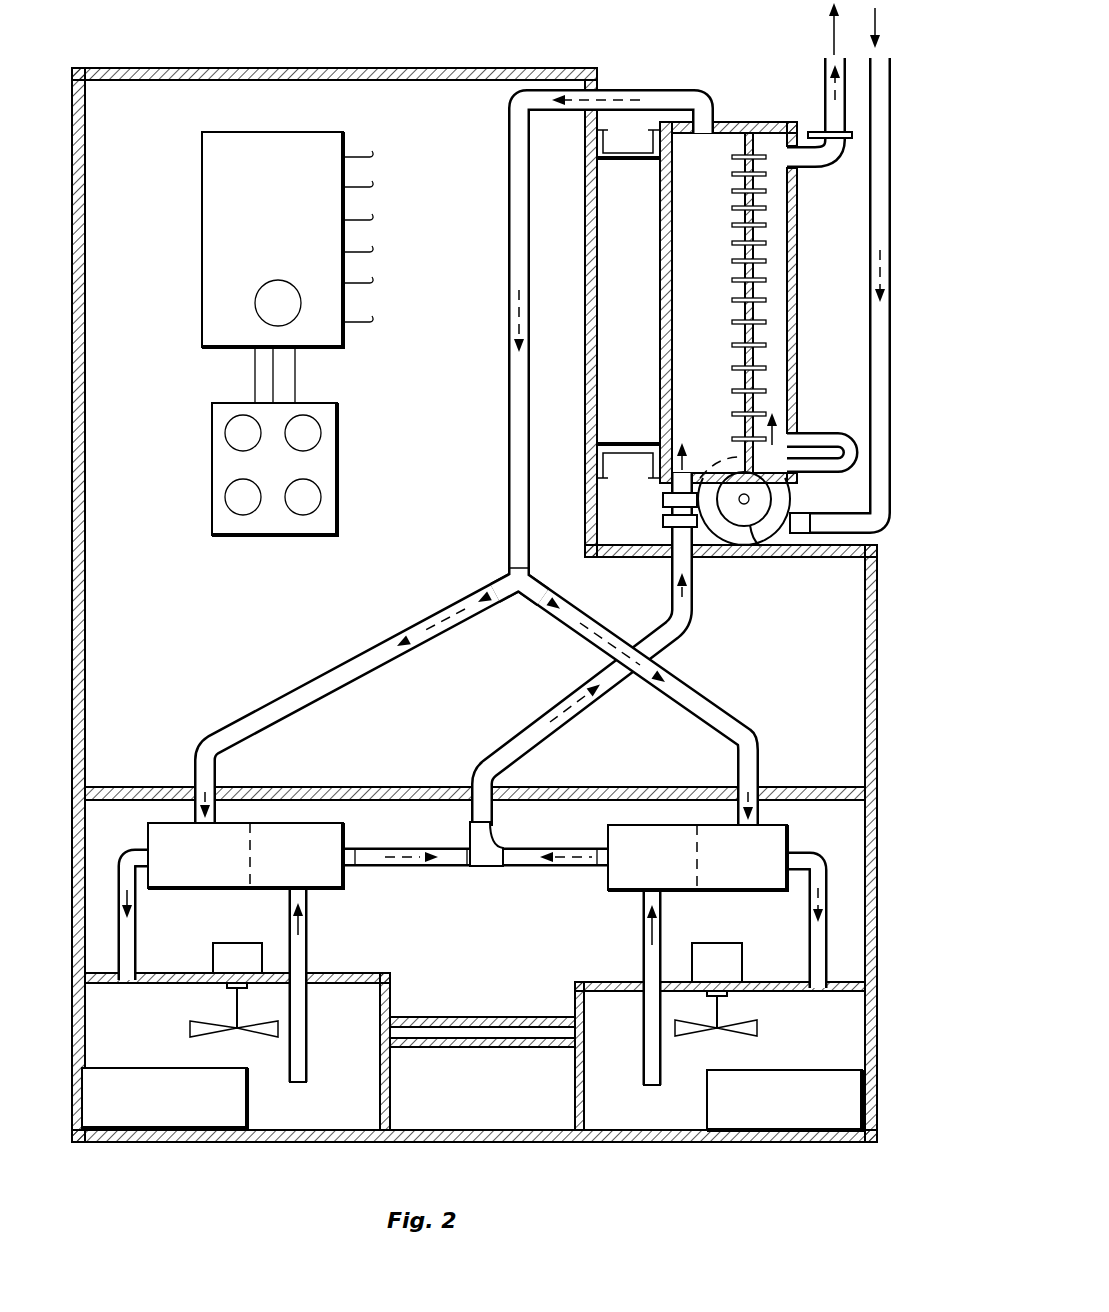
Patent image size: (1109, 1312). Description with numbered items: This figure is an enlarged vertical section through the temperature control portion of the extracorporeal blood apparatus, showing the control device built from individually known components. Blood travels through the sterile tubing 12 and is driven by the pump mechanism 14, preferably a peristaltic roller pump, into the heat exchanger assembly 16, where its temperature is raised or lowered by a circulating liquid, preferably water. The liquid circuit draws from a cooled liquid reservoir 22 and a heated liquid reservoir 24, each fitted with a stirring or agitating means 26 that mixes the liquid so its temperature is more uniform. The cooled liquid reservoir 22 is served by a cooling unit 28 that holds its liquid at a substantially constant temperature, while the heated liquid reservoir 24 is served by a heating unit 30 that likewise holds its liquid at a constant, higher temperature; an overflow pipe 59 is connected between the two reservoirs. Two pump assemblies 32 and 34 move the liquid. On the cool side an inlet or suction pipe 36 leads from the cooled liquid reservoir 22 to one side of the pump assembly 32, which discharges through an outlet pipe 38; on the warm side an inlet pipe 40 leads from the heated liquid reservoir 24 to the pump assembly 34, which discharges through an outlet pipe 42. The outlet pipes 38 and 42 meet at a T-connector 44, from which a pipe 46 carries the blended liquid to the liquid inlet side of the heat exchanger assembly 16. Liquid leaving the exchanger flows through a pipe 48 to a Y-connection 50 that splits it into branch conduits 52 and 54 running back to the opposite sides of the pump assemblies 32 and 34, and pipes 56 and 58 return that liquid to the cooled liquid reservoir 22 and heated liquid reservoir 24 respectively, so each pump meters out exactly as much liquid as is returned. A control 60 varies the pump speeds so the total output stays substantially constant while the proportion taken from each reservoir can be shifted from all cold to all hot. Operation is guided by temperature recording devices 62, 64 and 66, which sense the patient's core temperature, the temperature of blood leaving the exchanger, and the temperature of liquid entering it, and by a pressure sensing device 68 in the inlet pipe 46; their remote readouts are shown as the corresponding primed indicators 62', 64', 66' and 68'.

The sterile tubing 12 is at (878, 100).
The pump mechanism 14 is at (757, 547).
The heat exchanger assembly 16 is at (758, 120).
The cooled liquid reservoir 22 is at (362, 973).
The heated liquid reservoir 24 is at (588, 980).
The stirring or agitating means 26 is at (252, 953).
The cooling unit 28 is at (230, 1120).
The heating unit 30 is at (733, 1120).
The pump assembly 32 is at (270, 823).
The pump assembly 34 is at (680, 825).
The inlet or suction pipe 36 is at (308, 1017).
The outlet pipe 38 is at (410, 866).
The inlet pipe 40 is at (645, 898).
The outlet pipe 42 is at (582, 843).
The T-connector 44 is at (485, 868).
The pipe 46 is at (684, 632).
The pipe 48 is at (508, 435).
The Y-connection 50 is at (508, 580).
The branch conduit 52 is at (282, 717).
The branch conduit 54 is at (716, 708).
The pipe 56 is at (135, 945).
The return pipe 58 is at (810, 938).
The overflow pipe 59 is at (457, 1047).
The control 60 is at (256, 302).
The temperature recording device 62 is at (393, 230).
The remote readout 62' is at (203, 434).
The temperature recording device 64 is at (819, 101).
The remote readout 64' is at (345, 428).
The temperature recording device 66 is at (620, 507).
The remote readout 66' is at (203, 497).
The pressure sensing device 68 is at (620, 536).
The remote readout 68' is at (345, 497).